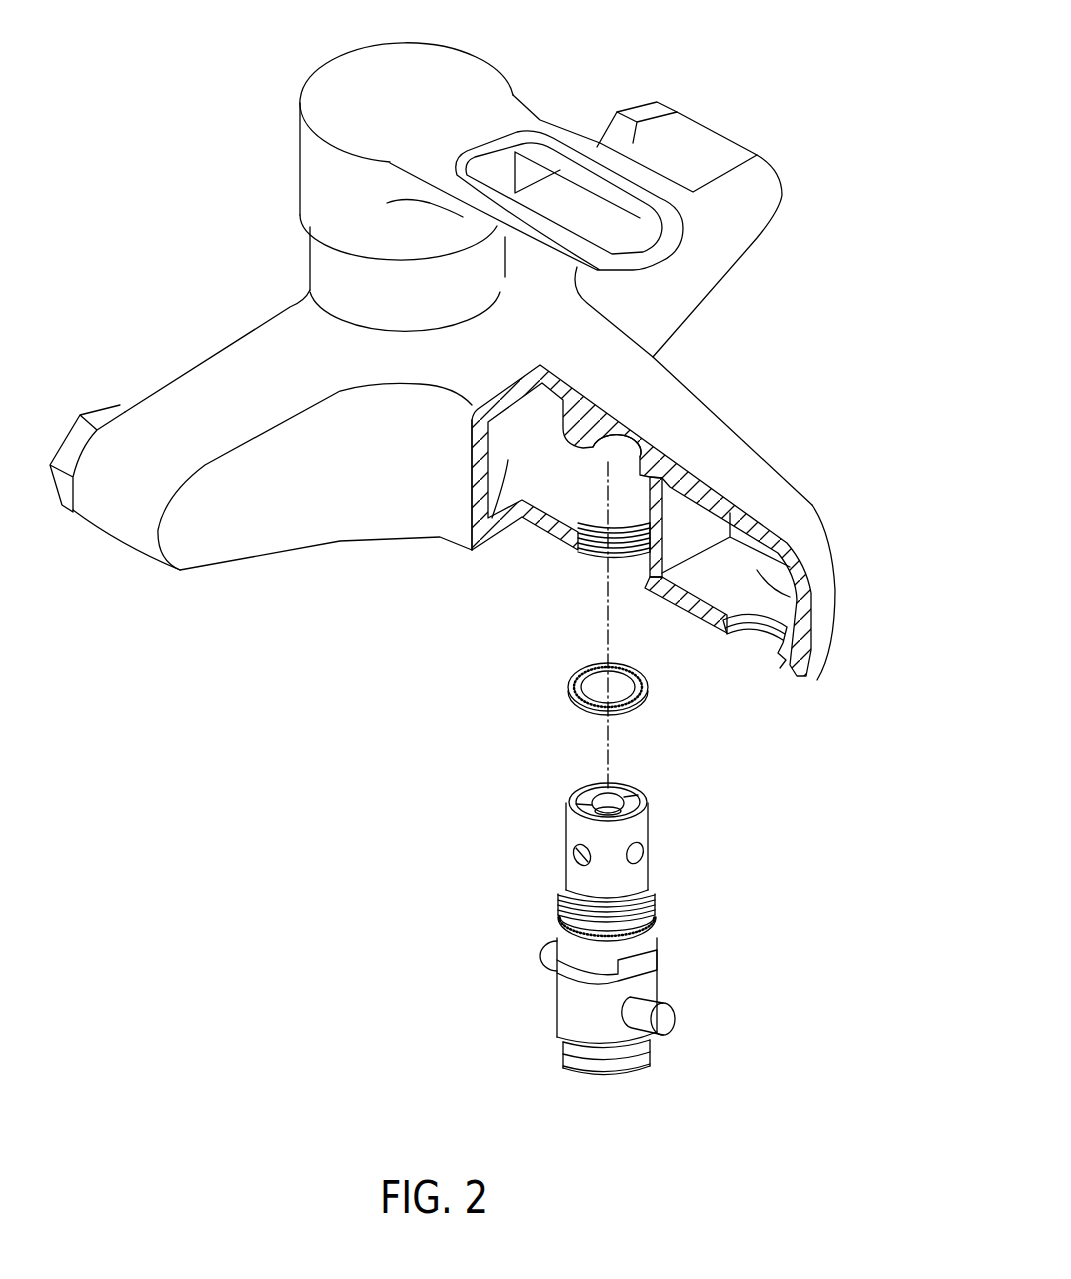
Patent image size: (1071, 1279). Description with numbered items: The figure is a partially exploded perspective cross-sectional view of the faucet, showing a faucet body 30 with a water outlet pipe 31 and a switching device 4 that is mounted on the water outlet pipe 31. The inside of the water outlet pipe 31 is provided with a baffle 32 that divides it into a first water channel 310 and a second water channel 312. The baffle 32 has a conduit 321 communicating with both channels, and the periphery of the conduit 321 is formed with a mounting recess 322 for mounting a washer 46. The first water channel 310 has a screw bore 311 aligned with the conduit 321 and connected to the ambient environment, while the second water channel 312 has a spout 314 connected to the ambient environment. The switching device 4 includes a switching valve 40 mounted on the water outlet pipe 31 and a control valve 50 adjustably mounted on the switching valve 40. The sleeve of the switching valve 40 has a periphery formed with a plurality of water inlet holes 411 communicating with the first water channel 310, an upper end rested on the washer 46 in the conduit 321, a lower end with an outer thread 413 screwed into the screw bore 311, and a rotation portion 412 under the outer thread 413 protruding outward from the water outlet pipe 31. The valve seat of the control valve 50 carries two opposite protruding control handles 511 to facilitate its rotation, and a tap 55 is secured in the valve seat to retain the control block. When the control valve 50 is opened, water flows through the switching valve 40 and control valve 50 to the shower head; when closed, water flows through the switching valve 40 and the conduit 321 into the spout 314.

The faucet body 30 is at (488, 388).
The water outlet pipe 31 is at (763, 470).
The baffle 32 is at (653, 470).
The first water channel 310 is at (472, 521).
The screw bore 311 is at (595, 553).
The second water channel 312 is at (790, 597).
The spout 314 is at (757, 622).
The conduit 321 is at (595, 452).
The mounting recess 322 is at (632, 553).
The washer 46 is at (648, 685).
The switching device 4 is at (570, 936).
The switching valve 40 is at (648, 832).
The water inlet holes 411 is at (575, 860).
The rotation portion 412 is at (643, 965).
The outer thread 413 is at (655, 904).
The control valve 50 is at (567, 1000).
The control handles 511 is at (667, 1018).
The tap 55 is at (650, 1060).